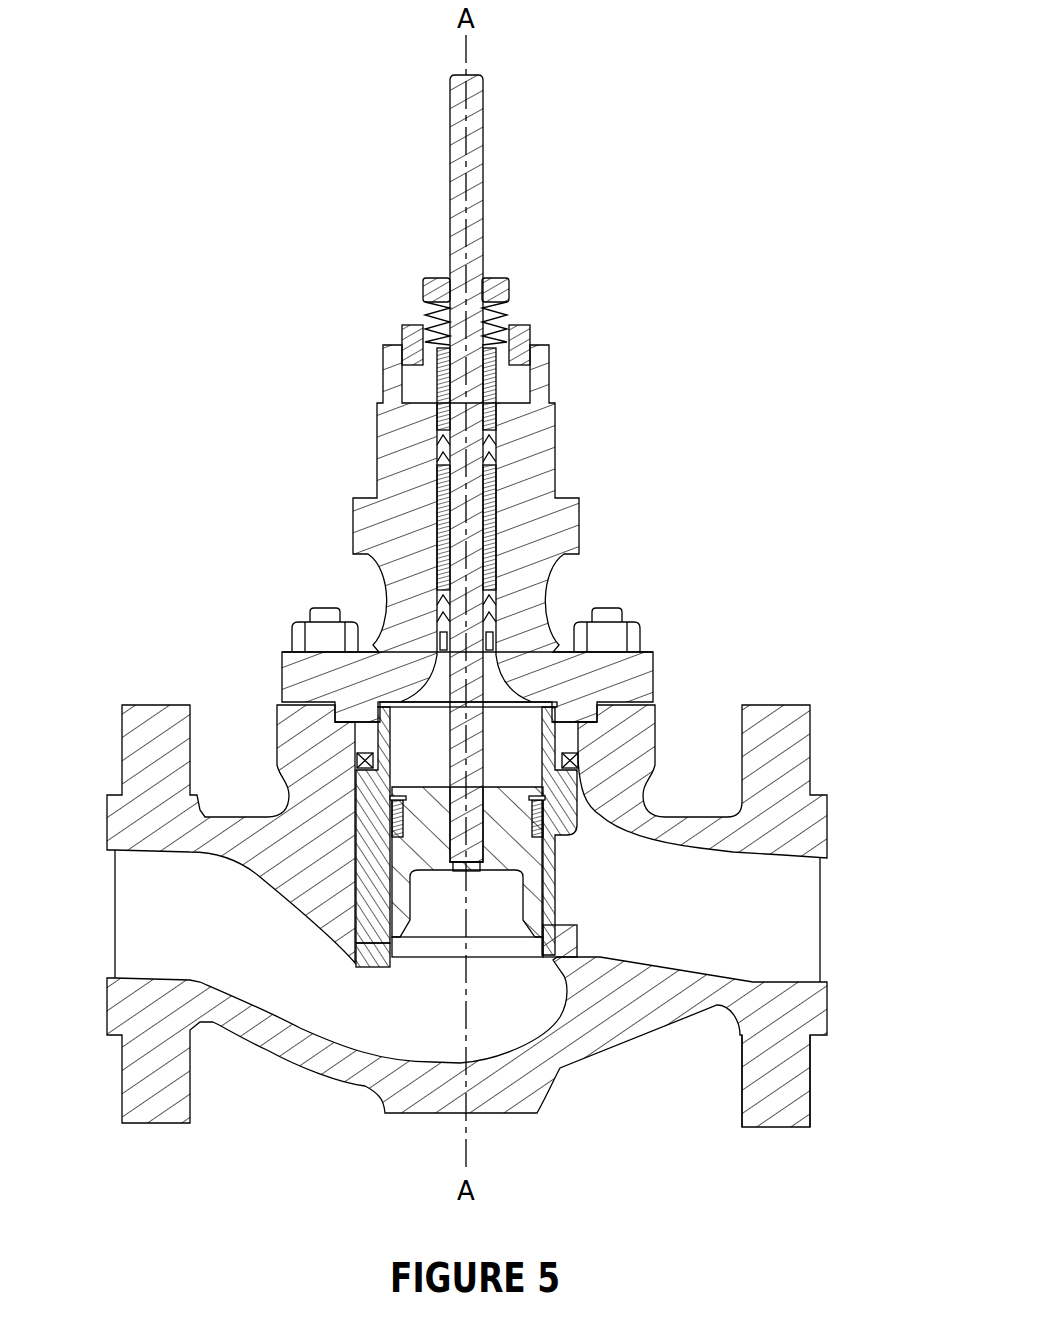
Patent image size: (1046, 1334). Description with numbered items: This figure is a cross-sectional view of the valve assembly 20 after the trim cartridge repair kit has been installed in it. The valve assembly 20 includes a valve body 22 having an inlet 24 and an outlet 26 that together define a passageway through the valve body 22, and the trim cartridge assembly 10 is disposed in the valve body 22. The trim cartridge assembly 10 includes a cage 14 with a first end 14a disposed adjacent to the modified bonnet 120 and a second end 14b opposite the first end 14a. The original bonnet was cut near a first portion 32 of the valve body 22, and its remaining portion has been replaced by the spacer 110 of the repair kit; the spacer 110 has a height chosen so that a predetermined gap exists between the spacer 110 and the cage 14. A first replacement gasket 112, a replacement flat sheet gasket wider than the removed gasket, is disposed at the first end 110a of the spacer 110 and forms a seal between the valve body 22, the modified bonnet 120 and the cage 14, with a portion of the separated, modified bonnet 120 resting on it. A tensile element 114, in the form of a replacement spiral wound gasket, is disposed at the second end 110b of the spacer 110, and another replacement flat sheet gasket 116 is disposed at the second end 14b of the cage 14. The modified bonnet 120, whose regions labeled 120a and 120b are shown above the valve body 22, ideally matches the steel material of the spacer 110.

The trim cartridge assembly 10 is at (652, 375).
The valve assembly 20 is at (873, 790).
The valve body 22 is at (795, 1090).
The inlet 24 is at (795, 920).
The outlet 26 is at (143, 922).
The first portion of the valve body 32 is at (330, 716).
The cage 14 is at (365, 862).
The first end of the cage 14a is at (355, 752).
The second end of the cage 14b is at (365, 932).
The spacer 110 is at (600, 735).
The first end of the spacer 110a is at (565, 737).
The second end of the spacer 110b is at (537, 797).
The first replacement gasket 112 is at (600, 703).
The tensile element 114 is at (583, 830).
The replacement flat sheet gasket 116 is at (588, 950).
The modified bonnet 120 is at (572, 536).
The bonnet flange 120a is at (302, 674).
The packing nuts 120b is at (548, 352).